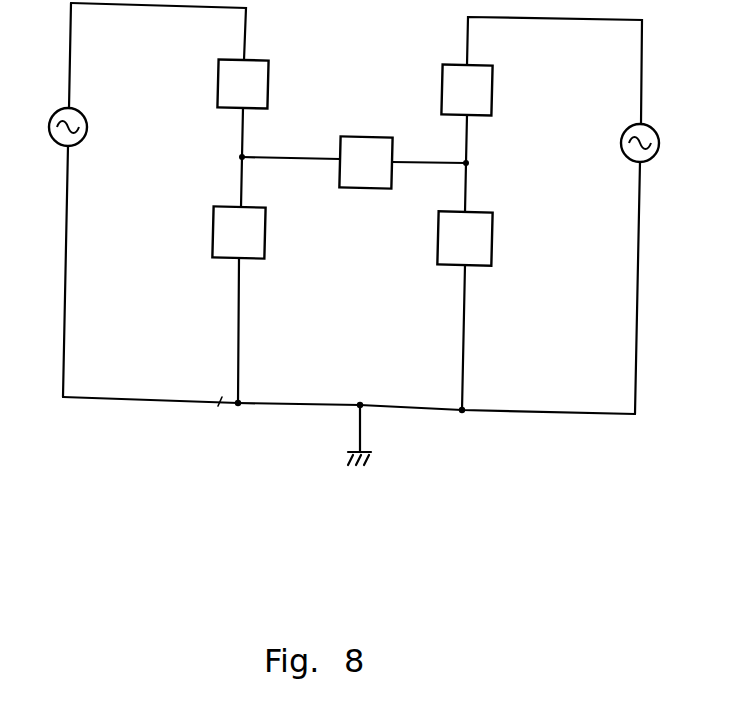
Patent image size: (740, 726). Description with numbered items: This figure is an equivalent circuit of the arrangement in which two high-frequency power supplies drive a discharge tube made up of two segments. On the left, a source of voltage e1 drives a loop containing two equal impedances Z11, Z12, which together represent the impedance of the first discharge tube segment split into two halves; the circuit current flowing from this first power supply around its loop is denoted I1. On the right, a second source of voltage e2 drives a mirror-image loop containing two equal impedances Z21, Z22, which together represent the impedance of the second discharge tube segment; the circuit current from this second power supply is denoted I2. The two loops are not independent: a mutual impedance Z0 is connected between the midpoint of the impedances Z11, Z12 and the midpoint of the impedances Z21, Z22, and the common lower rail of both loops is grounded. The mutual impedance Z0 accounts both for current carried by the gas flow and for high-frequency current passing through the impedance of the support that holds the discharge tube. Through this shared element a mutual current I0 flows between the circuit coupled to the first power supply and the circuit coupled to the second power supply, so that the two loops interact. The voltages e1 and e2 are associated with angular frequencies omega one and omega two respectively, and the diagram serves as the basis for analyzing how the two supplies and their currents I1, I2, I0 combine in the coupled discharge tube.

The impedance Z11 is at (245, 83).
The impedance Z12 is at (239, 232).
The impedance Z21 is at (467, 89).
The impedance Z22 is at (464, 238).
The mutual impedance Z0 is at (365, 162).
The voltage of the first high-frequency power supply e1 is at (88, 127).
The voltage of the second high-frequency power supply e2 is at (659, 143).
The circuit current I1 is at (196, 87).
The circuit current I2 is at (533, 100).
The mutual current I0 is at (425, 237).